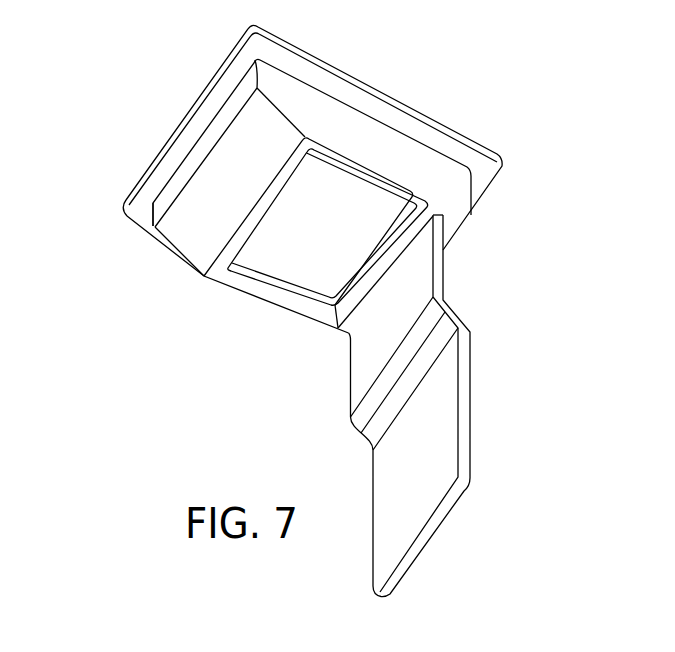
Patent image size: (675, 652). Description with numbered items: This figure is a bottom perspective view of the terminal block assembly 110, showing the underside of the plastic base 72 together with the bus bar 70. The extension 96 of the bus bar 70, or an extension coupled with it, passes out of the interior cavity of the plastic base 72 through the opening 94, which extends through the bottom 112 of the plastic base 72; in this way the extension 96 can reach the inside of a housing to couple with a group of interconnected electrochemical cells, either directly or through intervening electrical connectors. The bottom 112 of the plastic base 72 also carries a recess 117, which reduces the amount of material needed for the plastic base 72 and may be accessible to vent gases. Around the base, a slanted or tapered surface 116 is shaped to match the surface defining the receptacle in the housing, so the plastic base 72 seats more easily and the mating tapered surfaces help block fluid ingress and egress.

The terminal block assembly 110 is at (538, 257).
The plastic base 72 is at (148, 127).
The bus bar 70 is at (434, 200).
The extension 96 is at (444, 268).
The tapered surface 116 is at (201, 234).
The recess 117 is at (285, 242).
The opening 94 is at (375, 287).
The bottom 112 is at (340, 333).